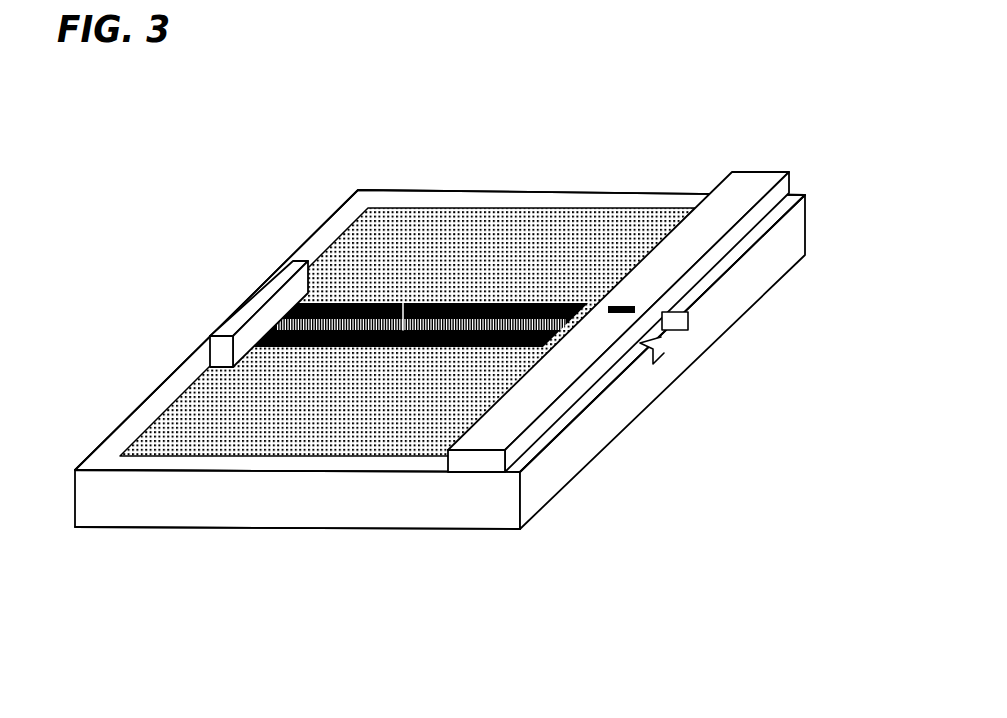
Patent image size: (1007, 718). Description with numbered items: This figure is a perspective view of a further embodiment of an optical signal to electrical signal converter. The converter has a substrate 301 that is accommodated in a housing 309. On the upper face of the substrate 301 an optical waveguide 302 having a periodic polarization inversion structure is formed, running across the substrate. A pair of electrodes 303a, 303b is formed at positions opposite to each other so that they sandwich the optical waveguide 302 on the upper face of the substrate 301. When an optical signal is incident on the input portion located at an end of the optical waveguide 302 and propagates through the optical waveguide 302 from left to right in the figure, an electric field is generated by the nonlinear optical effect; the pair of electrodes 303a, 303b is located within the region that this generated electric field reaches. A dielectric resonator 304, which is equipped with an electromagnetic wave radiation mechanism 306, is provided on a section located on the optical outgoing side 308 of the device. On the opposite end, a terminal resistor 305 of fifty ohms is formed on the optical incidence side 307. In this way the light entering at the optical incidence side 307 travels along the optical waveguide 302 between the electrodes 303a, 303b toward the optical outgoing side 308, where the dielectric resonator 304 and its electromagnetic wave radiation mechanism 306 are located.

The substrate 301 is at (313, 458).
The optical waveguide 302 is at (403, 303).
The electrode 303a is at (432, 303).
The electrode 303b is at (450, 347).
The dielectric resonator 304 is at (760, 172).
The terminal resistor 305 is at (207, 351).
The electromagnetic wave radiation mechanism 306 is at (636, 306).
The optical incidence side 307 is at (210, 334).
The optical outgoing side 308 is at (663, 340).
The housing 309 is at (297, 528).